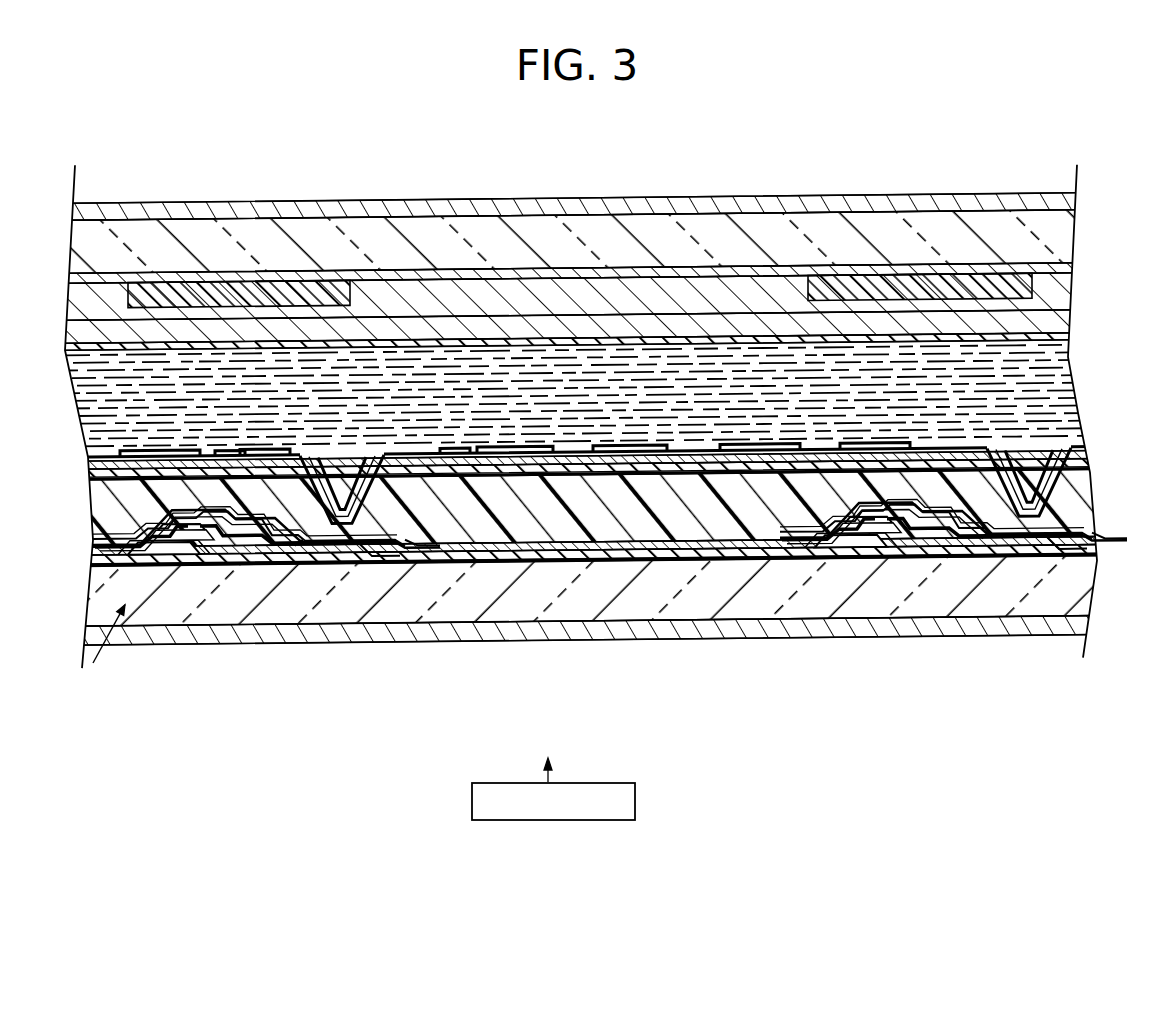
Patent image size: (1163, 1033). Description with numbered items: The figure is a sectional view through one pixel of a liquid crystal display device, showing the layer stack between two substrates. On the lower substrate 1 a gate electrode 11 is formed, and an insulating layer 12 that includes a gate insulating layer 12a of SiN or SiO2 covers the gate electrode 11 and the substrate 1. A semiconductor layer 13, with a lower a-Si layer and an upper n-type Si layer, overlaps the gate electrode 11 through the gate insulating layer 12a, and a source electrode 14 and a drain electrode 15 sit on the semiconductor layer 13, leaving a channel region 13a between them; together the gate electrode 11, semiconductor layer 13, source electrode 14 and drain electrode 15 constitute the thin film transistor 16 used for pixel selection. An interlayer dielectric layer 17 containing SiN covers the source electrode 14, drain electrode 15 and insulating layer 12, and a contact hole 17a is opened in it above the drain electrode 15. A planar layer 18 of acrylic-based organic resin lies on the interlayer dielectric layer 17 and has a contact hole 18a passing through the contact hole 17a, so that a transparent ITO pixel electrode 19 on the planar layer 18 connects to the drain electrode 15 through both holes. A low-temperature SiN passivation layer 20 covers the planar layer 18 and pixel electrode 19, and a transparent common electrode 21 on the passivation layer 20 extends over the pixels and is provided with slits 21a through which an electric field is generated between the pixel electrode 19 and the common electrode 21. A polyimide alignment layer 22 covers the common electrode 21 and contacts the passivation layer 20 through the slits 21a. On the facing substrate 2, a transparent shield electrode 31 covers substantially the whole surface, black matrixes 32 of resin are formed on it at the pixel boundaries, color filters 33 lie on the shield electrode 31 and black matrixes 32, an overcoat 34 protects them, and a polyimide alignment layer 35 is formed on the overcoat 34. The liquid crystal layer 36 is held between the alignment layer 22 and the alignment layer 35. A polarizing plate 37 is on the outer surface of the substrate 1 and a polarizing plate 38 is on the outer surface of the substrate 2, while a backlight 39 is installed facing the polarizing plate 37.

The substrate 1 is at (1090, 590).
The substrate 2 is at (1035, 256).
The gate electrode 11 is at (275, 548).
The insulating layer 12 is at (525, 566).
The gate insulating layer 12a is at (217, 528).
The semiconductor layer 13 is at (192, 532).
The channel region 13a is at (250, 532).
The source electrode 14 is at (160, 557).
The drain electrode 15 is at (313, 548).
The thin film transistor 16 is at (818, 603).
The interlayer dielectric layer 17 is at (563, 560).
The contact hole 17a is at (372, 562).
The planar layer 18 is at (597, 520).
The contact hole 18a is at (415, 550).
The pixel electrode 19 is at (633, 487).
The passivation layer 20 is at (733, 480).
The common electrode 21 is at (172, 456).
The slits 21a is at (232, 456).
The alignment layer 22 is at (1040, 466).
The shield electrode 31 is at (1055, 287).
The black matrixes 32 is at (172, 292).
The color filters 33 is at (92, 301).
The overcoat 34 is at (1045, 333).
The alignment layer 35 is at (1045, 358).
The liquid crystal layer 36 is at (1050, 388).
The polarizing plate 37 is at (500, 640).
The polarizing plate 38 is at (1045, 217).
The backlight 39 is at (637, 795).